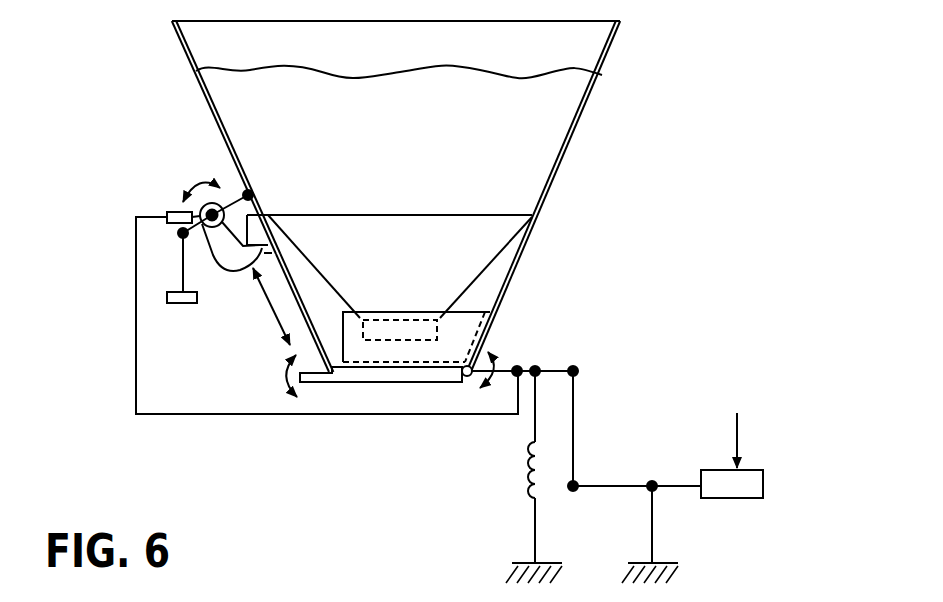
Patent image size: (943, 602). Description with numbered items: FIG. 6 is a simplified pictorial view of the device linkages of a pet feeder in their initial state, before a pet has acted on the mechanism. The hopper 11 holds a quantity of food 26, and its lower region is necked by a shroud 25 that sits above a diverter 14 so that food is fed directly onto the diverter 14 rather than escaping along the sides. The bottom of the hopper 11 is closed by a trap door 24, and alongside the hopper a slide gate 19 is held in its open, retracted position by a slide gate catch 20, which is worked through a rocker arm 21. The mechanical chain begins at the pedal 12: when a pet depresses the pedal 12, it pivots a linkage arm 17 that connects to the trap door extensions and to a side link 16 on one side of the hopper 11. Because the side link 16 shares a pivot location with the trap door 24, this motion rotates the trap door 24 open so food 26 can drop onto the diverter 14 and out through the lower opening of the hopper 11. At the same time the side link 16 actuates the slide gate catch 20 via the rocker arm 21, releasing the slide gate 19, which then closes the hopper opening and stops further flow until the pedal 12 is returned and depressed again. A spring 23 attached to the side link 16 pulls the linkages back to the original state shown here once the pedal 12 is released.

The hopper 11 is at (558, 168).
The pedal 12 is at (760, 470).
The diverter 14 is at (462, 330).
The side link 16 is at (263, 414).
The linkage arm 17 is at (573, 420).
The slide gate 19 is at (310, 347).
The slide gate catch 20 is at (230, 205).
The rocker arm 21 is at (191, 304).
The spring 23 is at (525, 455).
The trap door 24 is at (385, 383).
The shroud 25 is at (462, 273).
The food 26 is at (538, 88).